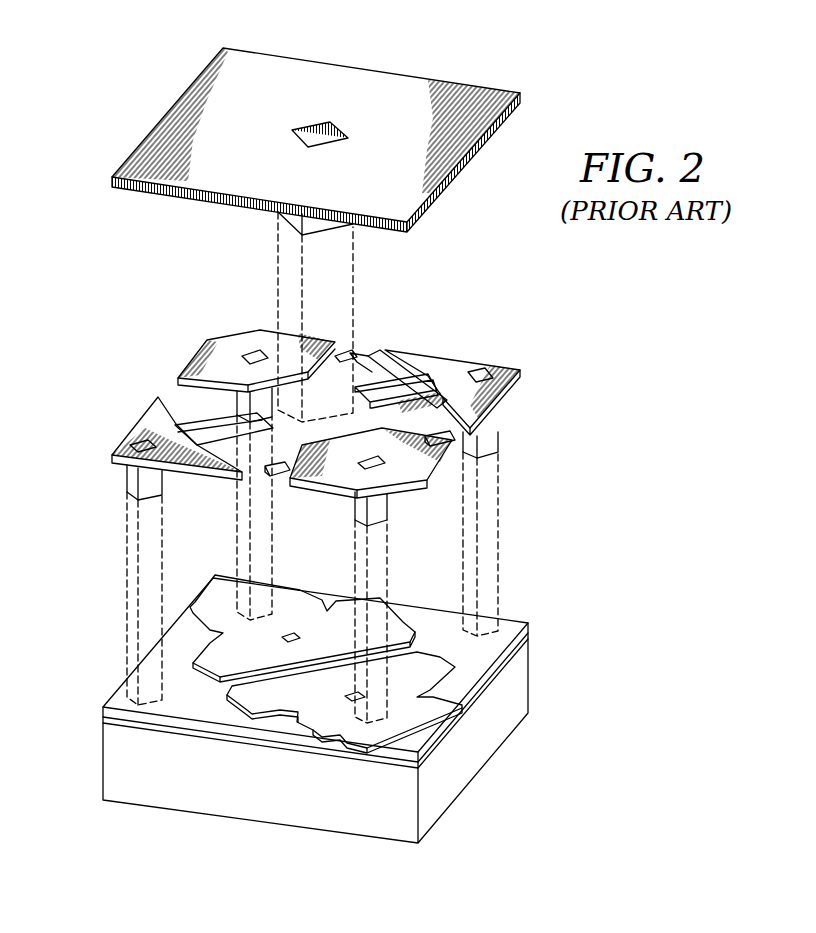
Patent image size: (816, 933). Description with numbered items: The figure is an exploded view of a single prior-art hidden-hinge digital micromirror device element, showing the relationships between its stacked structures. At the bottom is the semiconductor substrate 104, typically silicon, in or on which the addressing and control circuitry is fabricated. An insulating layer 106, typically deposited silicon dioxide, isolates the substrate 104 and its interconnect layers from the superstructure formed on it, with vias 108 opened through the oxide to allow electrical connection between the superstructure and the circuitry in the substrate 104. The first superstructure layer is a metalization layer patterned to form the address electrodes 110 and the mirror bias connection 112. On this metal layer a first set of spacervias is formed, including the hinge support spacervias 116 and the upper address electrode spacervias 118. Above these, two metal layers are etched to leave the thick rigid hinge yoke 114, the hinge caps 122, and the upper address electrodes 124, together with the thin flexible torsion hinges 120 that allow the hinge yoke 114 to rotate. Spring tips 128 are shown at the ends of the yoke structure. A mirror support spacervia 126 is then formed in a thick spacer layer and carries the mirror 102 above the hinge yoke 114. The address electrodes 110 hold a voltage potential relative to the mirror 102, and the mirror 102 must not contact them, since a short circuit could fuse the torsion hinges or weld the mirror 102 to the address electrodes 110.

The mirror 102 is at (288, 72).
The substrate 104 is at (470, 752).
The insulating layer 106 is at (102, 723).
The via 108 is at (283, 632).
The address electrodes 110 is at (222, 620).
The mirror bias connection 112 is at (118, 698).
The hinge yoke 114 is at (370, 362).
The hinge support spacervias 116 is at (132, 482).
The upper address electrode spacervias 118 is at (385, 503).
The torsion hinges 120 is at (175, 390).
The hinge cap 122 is at (445, 358).
The upper address electrodes 124 is at (249, 343).
The mirror support spacervia 126 is at (327, 222).
The spring tips 128 is at (460, 438).